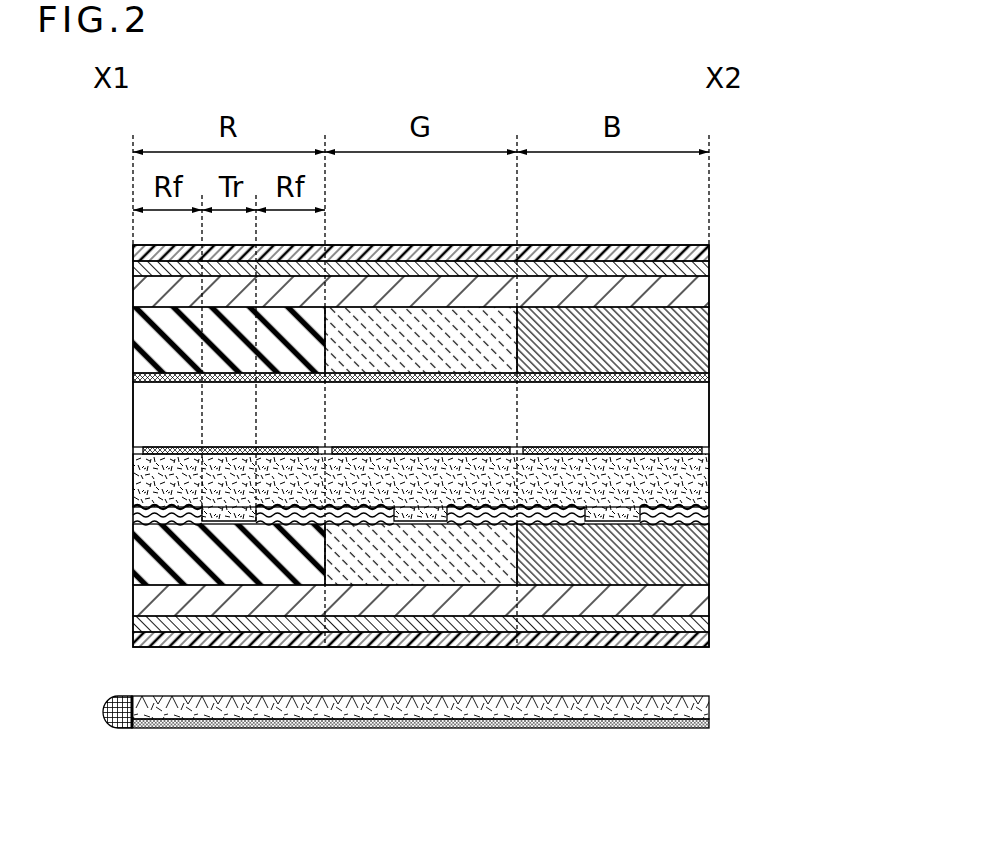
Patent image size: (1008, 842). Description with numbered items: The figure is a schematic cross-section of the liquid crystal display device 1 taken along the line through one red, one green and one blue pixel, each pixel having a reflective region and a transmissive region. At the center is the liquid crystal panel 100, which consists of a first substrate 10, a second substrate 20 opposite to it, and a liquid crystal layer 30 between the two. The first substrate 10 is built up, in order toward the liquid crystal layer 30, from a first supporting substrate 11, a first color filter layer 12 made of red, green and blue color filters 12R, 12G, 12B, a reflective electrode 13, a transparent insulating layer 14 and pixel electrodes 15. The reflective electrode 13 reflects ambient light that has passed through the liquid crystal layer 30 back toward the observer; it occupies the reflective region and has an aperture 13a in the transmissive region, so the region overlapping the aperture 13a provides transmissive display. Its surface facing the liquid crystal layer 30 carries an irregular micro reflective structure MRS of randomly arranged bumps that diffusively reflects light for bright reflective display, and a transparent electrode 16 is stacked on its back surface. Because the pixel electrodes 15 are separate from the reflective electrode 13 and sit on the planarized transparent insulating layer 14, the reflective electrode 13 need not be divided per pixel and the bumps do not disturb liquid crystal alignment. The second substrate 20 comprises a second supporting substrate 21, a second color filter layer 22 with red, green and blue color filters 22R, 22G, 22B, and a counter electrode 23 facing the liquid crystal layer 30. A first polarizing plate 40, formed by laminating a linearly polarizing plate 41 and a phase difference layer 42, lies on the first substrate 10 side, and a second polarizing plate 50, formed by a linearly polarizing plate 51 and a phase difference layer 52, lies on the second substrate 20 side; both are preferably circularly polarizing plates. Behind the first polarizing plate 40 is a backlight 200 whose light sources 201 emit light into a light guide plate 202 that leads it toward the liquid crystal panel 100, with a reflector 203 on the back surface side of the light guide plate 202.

The liquid crystal display device 1 is at (737, 156).
The first substrate 10 is at (435, 550).
The first supporting substrate 11 is at (459, 601).
The first color filter layer 12 is at (401, 608).
The red color filter 12R is at (143, 558).
The green color filter 12G is at (418, 578).
The blue color filter 12B is at (618, 578).
The reflective electrode 13 is at (712, 507).
The aperture 13a is at (256, 497).
The transparent insulating layer 14 is at (712, 487).
The pixel electrode 15 is at (712, 450).
The transparent electrode 16 is at (712, 520).
The second substrate 20 is at (433, 297).
The second supporting substrate 21 is at (712, 292).
The second color filter layer 22 is at (400, 282).
The red color filter 22R is at (135, 348).
The green color filter 22G is at (420, 325).
The blue color filter 22B is at (620, 330).
The counter electrode 23 is at (459, 388).
The liquid crystal layer 30 is at (127, 383).
The first polarizing plate 40 is at (482, 647).
The linearly polarizing plate 41 is at (712, 642).
The phase difference layer 42 is at (712, 624).
The second polarizing plate 50 is at (481, 235).
The linearly polarizing plate 51 is at (712, 254).
The phase difference layer 52 is at (712, 270).
The liquid crystal panel 100 is at (464, 442).
The backlight 200 is at (401, 769).
The light source 201 is at (119, 750).
The light guide plate 202 is at (253, 724).
The reflector 203 is at (180, 708).
The micro reflective structure MRS is at (135, 510).